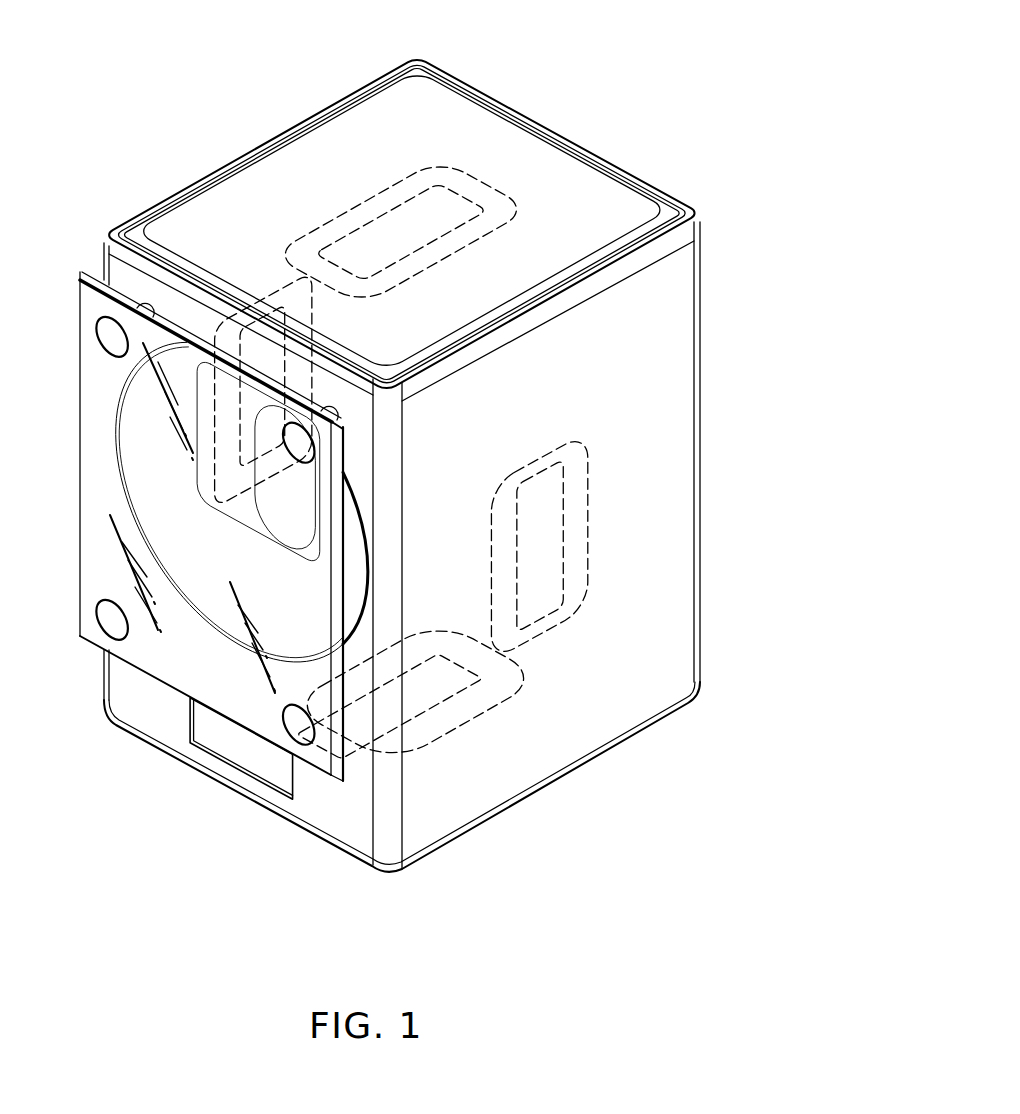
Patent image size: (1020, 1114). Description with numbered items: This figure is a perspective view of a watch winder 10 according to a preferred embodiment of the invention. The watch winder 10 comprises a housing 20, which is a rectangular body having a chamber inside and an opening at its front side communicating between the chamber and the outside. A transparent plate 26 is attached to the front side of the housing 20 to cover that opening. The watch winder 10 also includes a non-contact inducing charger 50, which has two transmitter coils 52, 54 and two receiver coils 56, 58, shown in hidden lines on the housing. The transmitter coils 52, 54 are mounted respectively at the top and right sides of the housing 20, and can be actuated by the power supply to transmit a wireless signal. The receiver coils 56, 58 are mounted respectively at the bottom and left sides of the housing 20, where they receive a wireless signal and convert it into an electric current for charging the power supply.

The watch winder 10 is at (656, 92).
The housing 20 is at (652, 345).
The transparent plate 26 is at (162, 667).
The non-contact inducing charger 50 is at (440, 762).
The transmitter coil 52 is at (370, 190).
The transmitter coil 54 is at (550, 642).
The receiver coil 56 is at (483, 714).
The receiver coil 58 is at (268, 277).